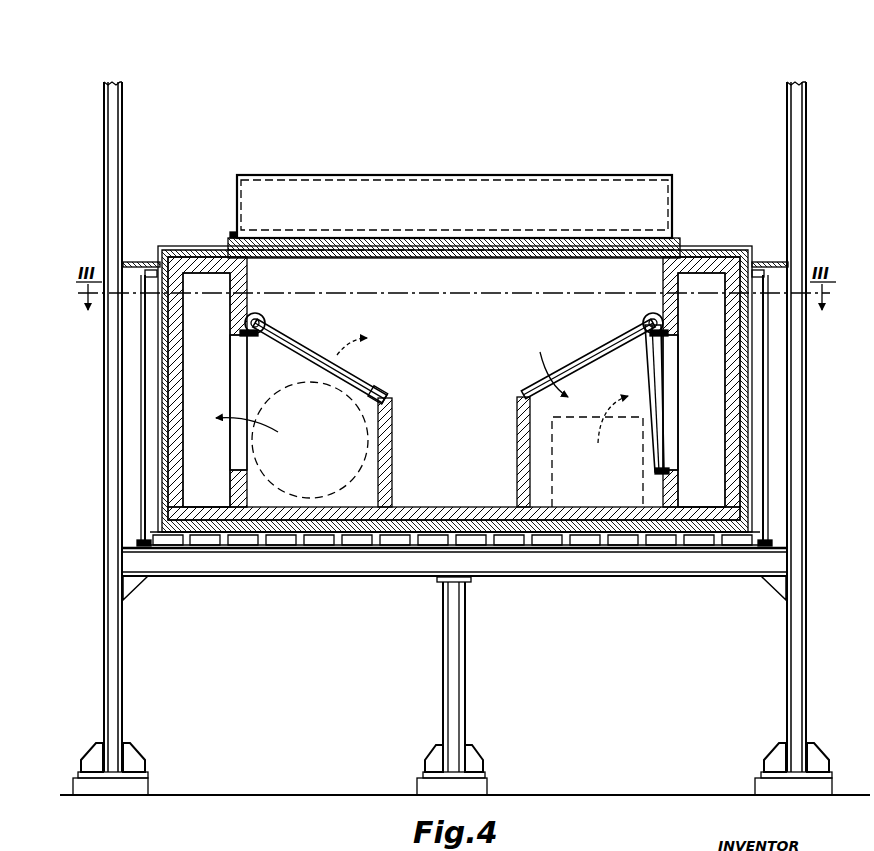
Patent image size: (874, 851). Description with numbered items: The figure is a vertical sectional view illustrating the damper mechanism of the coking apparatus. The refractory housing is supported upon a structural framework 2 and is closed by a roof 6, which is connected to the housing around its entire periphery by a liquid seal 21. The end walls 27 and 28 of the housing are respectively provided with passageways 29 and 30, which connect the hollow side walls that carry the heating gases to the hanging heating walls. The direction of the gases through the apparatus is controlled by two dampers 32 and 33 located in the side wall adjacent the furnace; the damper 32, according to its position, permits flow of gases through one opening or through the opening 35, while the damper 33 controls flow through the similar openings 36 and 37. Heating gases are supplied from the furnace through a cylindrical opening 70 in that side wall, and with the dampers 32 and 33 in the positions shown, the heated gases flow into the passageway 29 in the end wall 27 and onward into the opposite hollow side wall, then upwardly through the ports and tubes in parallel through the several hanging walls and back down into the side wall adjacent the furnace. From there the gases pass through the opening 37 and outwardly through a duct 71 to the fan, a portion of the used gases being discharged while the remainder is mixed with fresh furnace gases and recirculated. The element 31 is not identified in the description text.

The structural framework 2 is at (460, 635).
The roof 6 is at (680, 250).
The liquid seal 21 is at (233, 232).
The end wall 27 is at (165, 333).
The end wall 28 is at (735, 335).
The passageway 29 is at (195, 373).
The passageway 30 is at (708, 390).
The left wall opening 31 is at (238, 438).
The opening 36 is at (670, 437).
The damper 32 is at (290, 345).
The damper 33 is at (655, 365).
The opening 35 is at (375, 390).
The opening 37 is at (585, 357).
The cylindrical opening 70 is at (392, 460).
The duct 71 is at (528, 464).